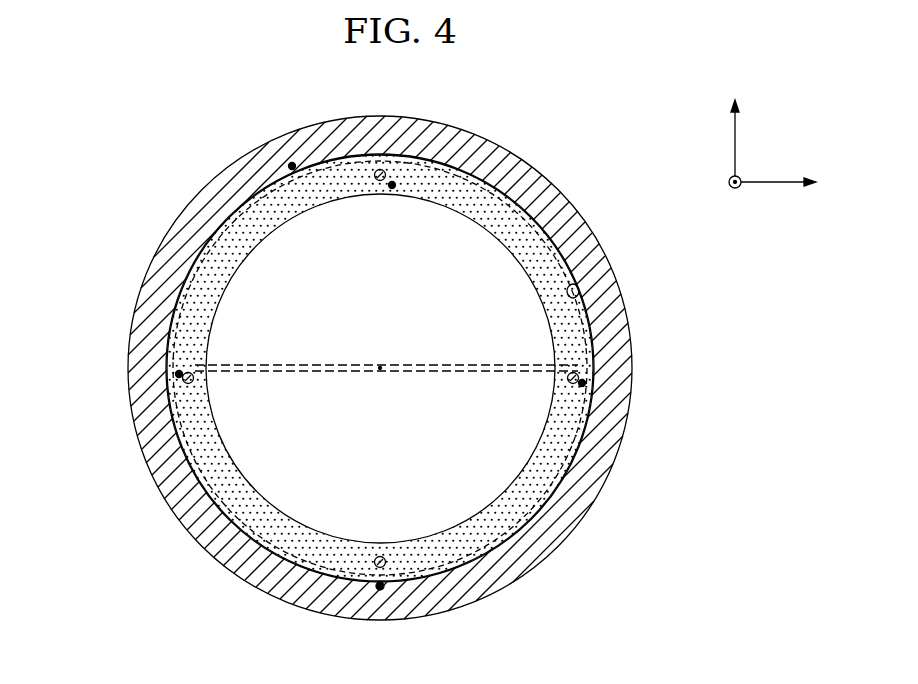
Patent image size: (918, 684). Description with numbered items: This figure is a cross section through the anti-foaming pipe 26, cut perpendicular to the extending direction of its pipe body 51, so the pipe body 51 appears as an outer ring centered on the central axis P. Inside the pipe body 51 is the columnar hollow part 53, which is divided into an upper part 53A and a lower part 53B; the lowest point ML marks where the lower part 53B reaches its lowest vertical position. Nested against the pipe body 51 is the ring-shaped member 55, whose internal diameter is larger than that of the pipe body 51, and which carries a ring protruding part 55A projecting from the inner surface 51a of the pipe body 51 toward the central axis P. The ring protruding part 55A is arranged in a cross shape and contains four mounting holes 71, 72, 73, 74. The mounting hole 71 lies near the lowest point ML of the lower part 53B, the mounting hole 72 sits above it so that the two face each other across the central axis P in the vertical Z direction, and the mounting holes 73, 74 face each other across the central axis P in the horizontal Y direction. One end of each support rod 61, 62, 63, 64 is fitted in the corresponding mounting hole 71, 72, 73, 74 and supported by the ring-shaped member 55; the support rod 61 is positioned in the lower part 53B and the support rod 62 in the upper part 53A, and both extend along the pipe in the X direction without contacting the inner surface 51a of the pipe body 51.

The anti-foaming pipe 26 is at (102, 97).
The pipe body 51 is at (465, 138).
The inner surface 51a is at (579, 284).
The hollow part 53 is at (471, 368).
The upper part 53A is at (552, 396).
The lower part 53B is at (560, 470).
The ring-shaped member 55 is at (291, 164).
The ring protruding part 55A is at (500, 188).
The support rod 61 is at (383, 556).
The support rod 62 is at (377, 170).
The support rod 63 is at (178, 379).
The support rod 64 is at (576, 373).
The mounting hole 71 is at (377, 587).
The mounting hole 72 is at (396, 185).
The mounting hole 73 is at (184, 376).
The mounting hole 74 is at (585, 384).
The lowest point ML is at (381, 568).
The central axis P is at (380, 368).